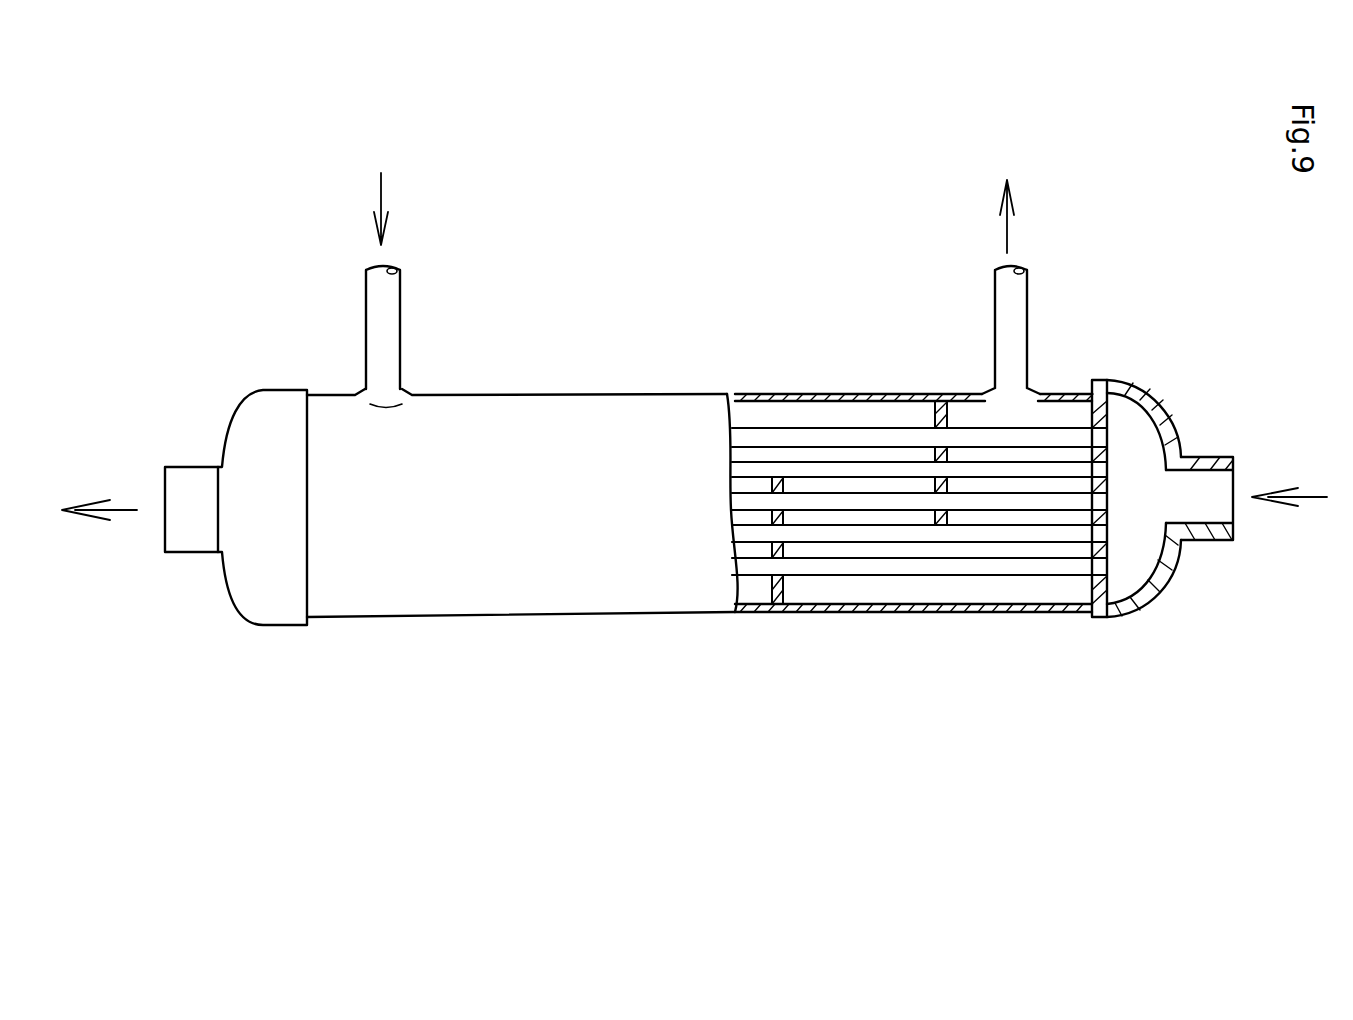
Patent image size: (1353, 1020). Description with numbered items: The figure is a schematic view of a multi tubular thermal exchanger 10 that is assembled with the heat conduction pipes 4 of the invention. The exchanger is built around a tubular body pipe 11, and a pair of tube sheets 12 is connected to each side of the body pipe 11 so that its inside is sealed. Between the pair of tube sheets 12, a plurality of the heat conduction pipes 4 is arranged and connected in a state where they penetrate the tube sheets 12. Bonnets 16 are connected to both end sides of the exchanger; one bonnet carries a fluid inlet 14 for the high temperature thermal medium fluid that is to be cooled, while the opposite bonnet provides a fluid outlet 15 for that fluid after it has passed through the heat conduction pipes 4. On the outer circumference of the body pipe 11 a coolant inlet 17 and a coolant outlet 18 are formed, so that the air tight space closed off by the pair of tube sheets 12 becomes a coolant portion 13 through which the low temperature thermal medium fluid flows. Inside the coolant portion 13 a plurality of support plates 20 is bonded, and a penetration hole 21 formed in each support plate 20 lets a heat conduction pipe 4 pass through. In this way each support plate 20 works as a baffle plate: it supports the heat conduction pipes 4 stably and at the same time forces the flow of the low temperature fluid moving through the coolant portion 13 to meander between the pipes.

The heat conduction pipe 4 is at (820, 440).
The multi tubular thermal exchanger 10 is at (591, 327).
The body pipe 11 is at (643, 407).
The tube sheet 12 is at (1110, 600).
The coolant portion 13 is at (877, 590).
The fluid inlet 14 is at (1222, 507).
The outlet port 15 is at (165, 490).
The bonnet 16 is at (262, 392).
The coolant inlet 17 is at (393, 268).
The coolant outlet 18 is at (1013, 270).
The support plate 20 is at (943, 403).
The penetration hole 21 is at (950, 405).